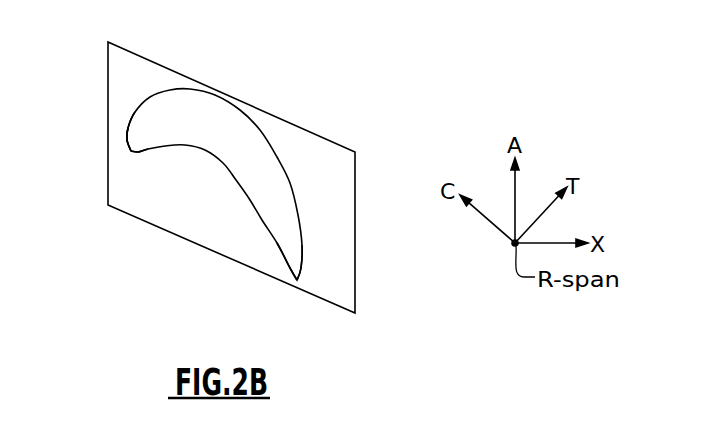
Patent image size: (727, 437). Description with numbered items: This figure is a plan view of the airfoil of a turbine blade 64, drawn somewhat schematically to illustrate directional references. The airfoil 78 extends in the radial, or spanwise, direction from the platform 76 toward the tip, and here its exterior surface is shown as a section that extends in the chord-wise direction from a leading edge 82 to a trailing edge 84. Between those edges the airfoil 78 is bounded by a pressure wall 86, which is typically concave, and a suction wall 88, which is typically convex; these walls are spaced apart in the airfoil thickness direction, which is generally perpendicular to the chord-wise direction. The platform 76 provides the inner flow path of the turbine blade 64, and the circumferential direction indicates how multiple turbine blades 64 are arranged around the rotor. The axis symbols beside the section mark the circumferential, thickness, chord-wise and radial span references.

The turbine blade 64 is at (213, 186).
The platform 76 is at (163, 57).
The airfoil 78 is at (131, 159).
The leading edge 82 is at (130, 148).
The trailing edge 84 is at (297, 283).
The pressure wall 86 is at (223, 163).
The suction wall 88 is at (232, 107).